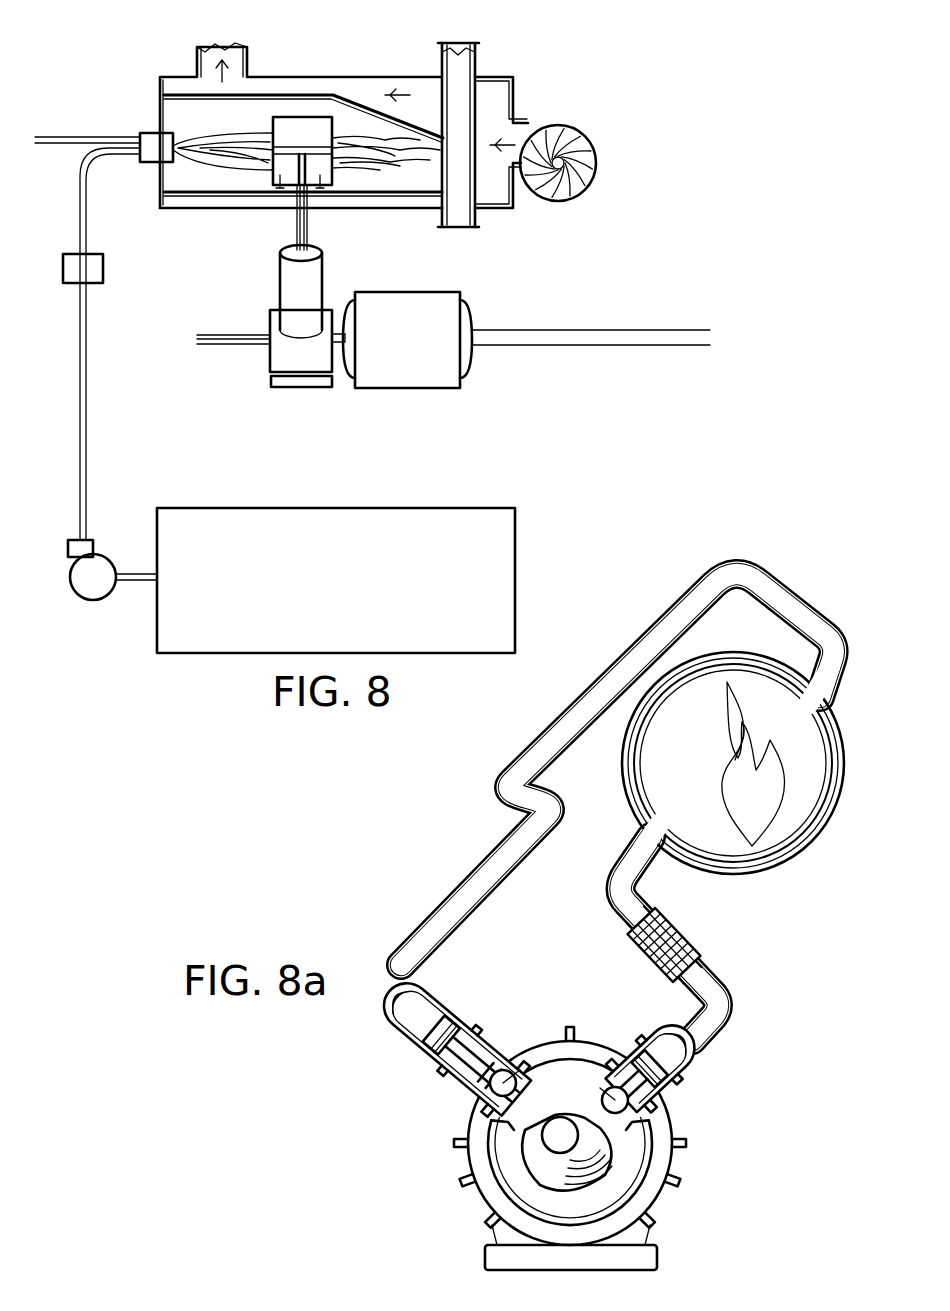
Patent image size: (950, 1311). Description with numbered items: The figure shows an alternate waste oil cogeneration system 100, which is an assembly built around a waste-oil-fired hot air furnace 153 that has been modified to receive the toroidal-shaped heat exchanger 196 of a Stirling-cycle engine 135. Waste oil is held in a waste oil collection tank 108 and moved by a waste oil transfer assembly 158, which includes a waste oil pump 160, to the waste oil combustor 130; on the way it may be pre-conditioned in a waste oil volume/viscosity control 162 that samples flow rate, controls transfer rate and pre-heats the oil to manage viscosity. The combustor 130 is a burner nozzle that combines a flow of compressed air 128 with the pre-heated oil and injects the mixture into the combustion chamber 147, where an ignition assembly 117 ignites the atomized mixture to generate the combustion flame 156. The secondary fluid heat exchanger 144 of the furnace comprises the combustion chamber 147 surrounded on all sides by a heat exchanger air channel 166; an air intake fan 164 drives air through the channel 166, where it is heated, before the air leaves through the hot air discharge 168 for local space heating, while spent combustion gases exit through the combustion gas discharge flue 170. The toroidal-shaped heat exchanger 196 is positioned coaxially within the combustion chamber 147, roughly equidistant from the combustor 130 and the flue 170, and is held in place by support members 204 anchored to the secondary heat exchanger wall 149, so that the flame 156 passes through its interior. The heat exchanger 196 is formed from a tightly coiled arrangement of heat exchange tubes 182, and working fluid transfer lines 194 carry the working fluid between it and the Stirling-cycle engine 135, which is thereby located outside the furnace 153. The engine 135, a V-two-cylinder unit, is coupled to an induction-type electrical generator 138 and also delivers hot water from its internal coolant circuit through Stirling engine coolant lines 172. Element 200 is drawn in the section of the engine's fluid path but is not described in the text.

In FIG. 8, the waste oil cogeneration system 100 is at (328, 35).
In FIG. 8, the waste oil collection tank 108 is at (310, 597).
In FIG. 8, the ignition assembly 117 is at (172, 137).
In FIG. 8, the compressed air 128 is at (92, 132).
In FIG. 8, the waste oil combustor 130 is at (155, 163).
In FIG. 8, the Stirling-cycle engine 135 is at (294, 392).
In FIG. 8A, the Stirling-cycle engine 135 is at (413, 1025).
In FIG. 8, the electrical generator 138 is at (440, 395).
In FIG. 8A, the electrical generator 138 is at (657, 1207).
In FIG. 8, the secondary fluid heat exchanger 144 is at (157, 73).
In FIG. 8, the combustion chamber 147 is at (440, 190).
In FIG. 8, the secondary heat exchanger wall 149 is at (252, 100).
In FIG. 8, the waste-oil-fired hot air furnace 153 is at (520, 82).
In FIG. 8, the combustion flame 156 is at (223, 160).
In FIG. 8A, the combustion flame 156 is at (765, 775).
In FIG. 8, the waste oil transfer assembly 158 is at (88, 325).
In FIG. 8, the waste oil pump 160 is at (75, 593).
In FIG. 8, the waste oil volume/viscosity control 162 is at (103, 268).
In FIG. 8, the air intake fan 164 is at (582, 132).
In FIG. 8, the heat exchanger air channel 166 is at (428, 90).
In FIG. 8, the hot air discharge 168 is at (220, 42).
In FIG. 8, the combustion gas discharge flue 170 is at (478, 62).
In FIG. 8, the Stirling engine coolant lines 172 is at (242, 350).
In FIG. 8, the heat exchange tubes 182 is at (326, 117).
In FIG. 8A, the heat exchange tubes 182 is at (697, 854).
In FIG. 8, the working fluid transfer lines 194 is at (293, 226).
In FIG. 8A, the working fluid transfer lines 194 is at (545, 838).
In FIG. 8, the toroidal-shaped heat exchanger 196 is at (300, 117).
In FIG. 8A, the toroidal-shaped heat exchanger 196 is at (770, 880).
In FIG. 8A, the filter 200 is at (698, 937).
In FIG. 8, the support members 204 is at (330, 190).